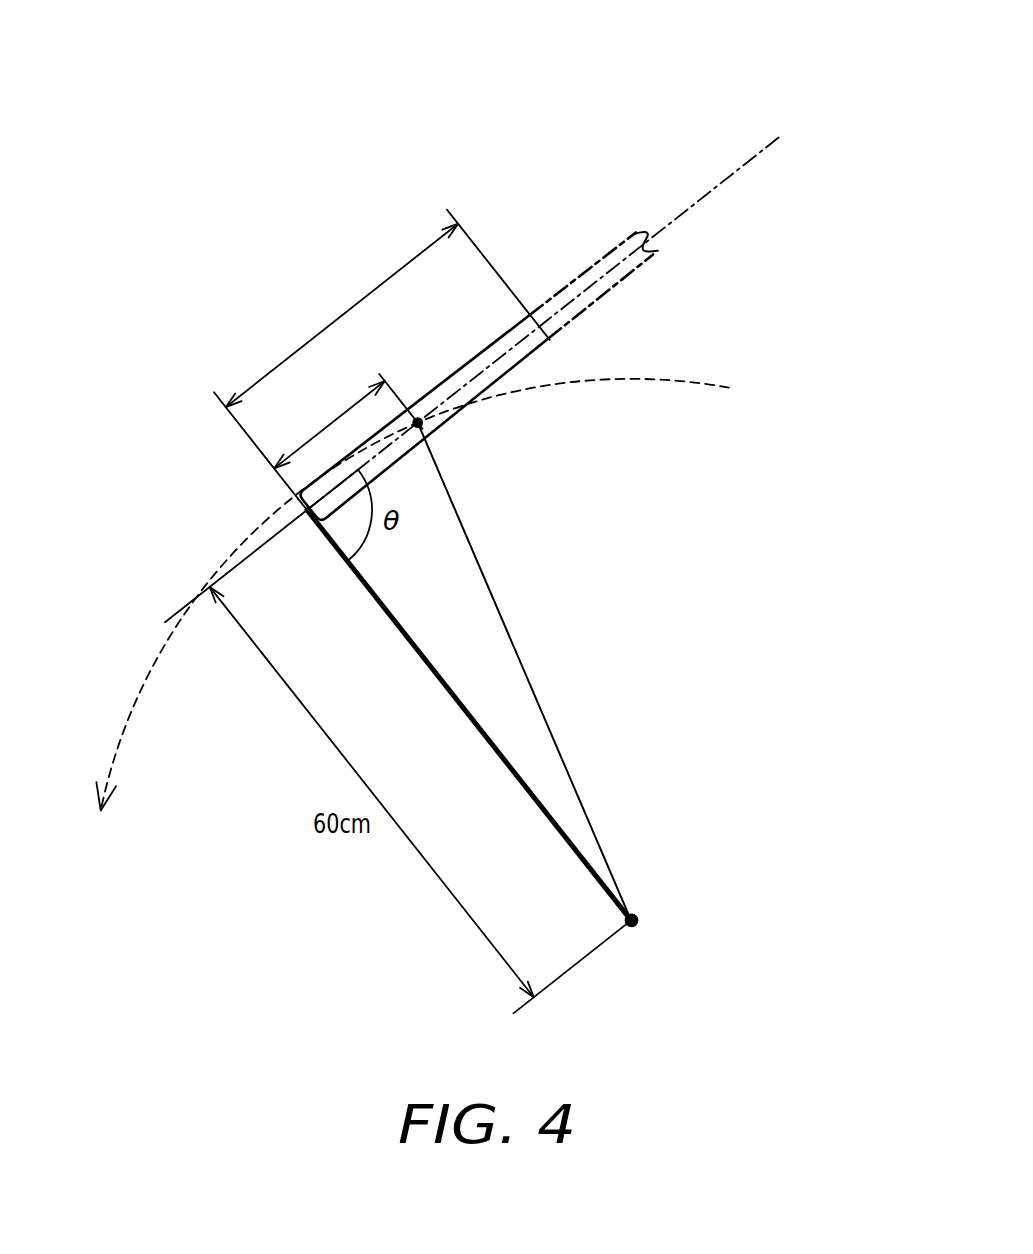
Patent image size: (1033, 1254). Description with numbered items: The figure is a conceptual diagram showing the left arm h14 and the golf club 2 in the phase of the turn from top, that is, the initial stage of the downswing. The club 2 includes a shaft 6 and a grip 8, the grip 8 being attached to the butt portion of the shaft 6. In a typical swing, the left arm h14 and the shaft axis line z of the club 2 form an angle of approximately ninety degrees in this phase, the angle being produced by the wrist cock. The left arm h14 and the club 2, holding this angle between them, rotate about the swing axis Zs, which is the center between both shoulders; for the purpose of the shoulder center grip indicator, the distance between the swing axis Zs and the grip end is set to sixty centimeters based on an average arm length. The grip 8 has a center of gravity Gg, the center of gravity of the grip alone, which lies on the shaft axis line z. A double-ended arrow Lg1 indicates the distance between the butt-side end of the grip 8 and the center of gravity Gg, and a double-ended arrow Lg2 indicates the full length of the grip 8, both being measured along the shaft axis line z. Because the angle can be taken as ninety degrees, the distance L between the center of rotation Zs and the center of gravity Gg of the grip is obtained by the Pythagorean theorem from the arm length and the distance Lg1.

The golf club 2 is at (479, 263).
The shaft 6 is at (590, 268).
The grip 8 is at (450, 372).
The shaft axis line z is at (747, 160).
The center of gravity of the grip Gg is at (421, 425).
The distance between the center of rotation and the center of gravity of the grip L is at (560, 748).
The left arm h14 is at (500, 763).
The swing axis Zs is at (647, 920).
The distance between the butt-side end of the grip and the center of gravity of the Lg1 is at (348, 421).
The full length of the grip Lg2 is at (382, 360).